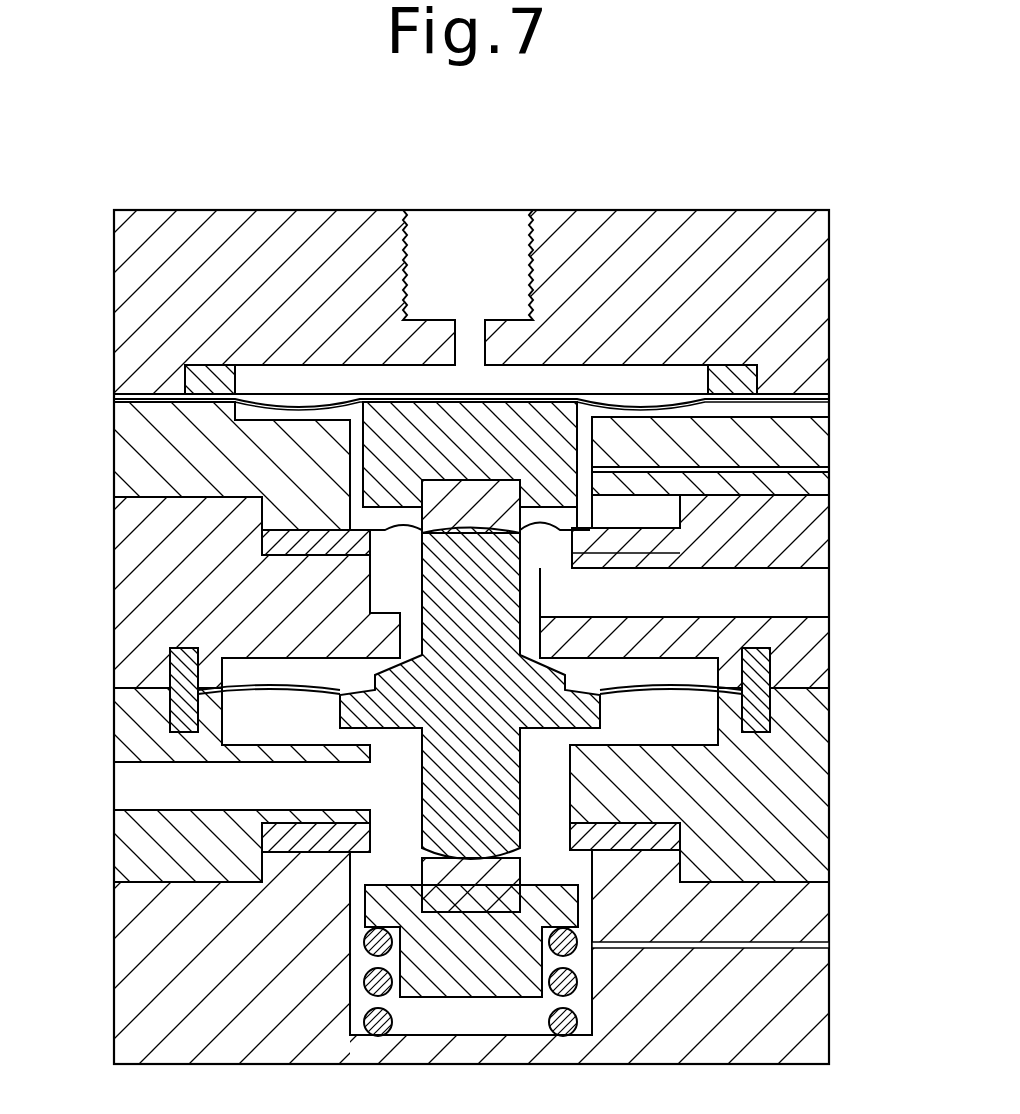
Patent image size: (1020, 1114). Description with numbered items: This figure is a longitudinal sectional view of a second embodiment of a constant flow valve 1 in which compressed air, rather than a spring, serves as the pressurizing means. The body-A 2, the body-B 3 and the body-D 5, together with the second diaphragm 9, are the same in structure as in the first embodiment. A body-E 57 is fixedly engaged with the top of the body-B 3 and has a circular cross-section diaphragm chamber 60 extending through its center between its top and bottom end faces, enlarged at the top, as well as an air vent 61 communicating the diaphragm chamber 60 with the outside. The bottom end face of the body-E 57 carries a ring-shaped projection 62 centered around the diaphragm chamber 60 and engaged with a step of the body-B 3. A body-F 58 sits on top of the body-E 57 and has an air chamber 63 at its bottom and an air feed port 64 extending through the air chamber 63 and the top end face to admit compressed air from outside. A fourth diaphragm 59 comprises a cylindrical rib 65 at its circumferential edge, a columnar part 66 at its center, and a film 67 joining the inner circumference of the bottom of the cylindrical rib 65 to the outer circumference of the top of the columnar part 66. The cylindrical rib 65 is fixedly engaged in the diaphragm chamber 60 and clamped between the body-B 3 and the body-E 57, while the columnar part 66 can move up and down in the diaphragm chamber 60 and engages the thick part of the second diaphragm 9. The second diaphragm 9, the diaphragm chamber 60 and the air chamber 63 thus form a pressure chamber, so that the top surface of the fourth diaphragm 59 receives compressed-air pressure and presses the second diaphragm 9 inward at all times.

The valve 1 is at (850, 369).
The body-A 2 is at (790, 849).
The body-B 3 is at (153, 545).
The body-D 5 is at (177, 1010).
The second diaphragm 9 is at (487, 520).
The body-E 57 is at (165, 443).
The body-F 58 is at (165, 312).
The fourth diaphragm 59 is at (763, 208).
The diaphragm chamber 60 is at (165, 400).
The air vent 61 is at (770, 474).
The ring-shaped projection 62 is at (643, 515).
The air chamber 63 is at (527, 382).
The air feed port 64 is at (473, 337).
The cylindrical rib 65 is at (585, 402).
The columnar part 66 is at (530, 438).
The film 67 is at (640, 405).